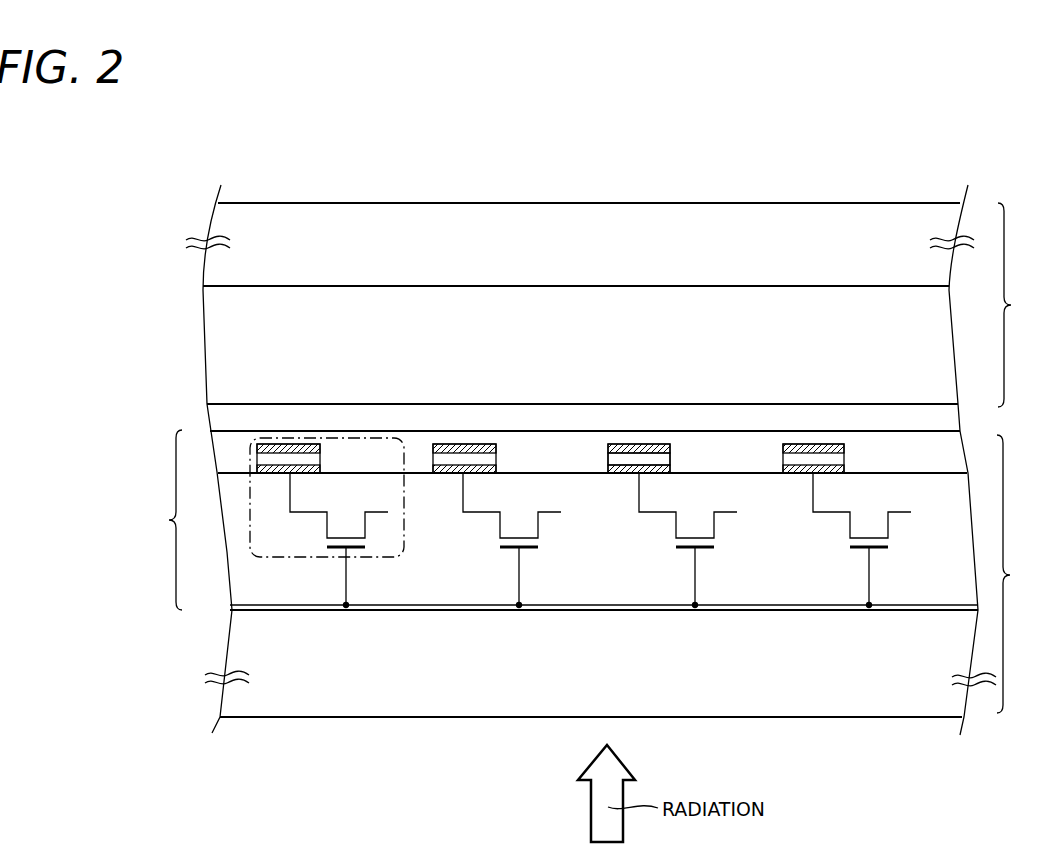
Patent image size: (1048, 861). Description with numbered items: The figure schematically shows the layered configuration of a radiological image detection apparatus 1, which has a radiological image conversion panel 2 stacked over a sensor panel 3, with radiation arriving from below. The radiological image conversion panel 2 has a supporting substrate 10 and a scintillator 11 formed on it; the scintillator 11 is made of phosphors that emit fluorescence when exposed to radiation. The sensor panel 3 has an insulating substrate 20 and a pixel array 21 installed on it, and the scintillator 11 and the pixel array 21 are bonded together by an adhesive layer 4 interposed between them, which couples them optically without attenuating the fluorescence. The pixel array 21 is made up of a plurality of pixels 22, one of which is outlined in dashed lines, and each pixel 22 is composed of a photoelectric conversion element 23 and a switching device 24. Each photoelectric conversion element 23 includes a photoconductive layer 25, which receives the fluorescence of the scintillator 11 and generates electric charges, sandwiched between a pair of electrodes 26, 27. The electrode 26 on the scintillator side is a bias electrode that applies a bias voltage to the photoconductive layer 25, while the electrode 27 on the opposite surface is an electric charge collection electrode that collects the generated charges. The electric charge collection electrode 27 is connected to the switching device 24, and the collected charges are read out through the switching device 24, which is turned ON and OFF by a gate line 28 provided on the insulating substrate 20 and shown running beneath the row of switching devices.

The radiological image detection apparatus 1 is at (912, 152).
The radiological image conversion panel 2 is at (615, 305).
The sensor panel 3 is at (627, 574).
The adhesive layer 4 is at (950, 420).
The supporting substrate 10 is at (348, 208).
The scintillator 11 is at (225, 348).
The insulating substrate 20 is at (330, 705).
The pixel array 21 is at (158, 520).
The pixel 22 is at (246, 522).
The photoelectric conversion element 23 is at (580, 396).
The switching device 24 is at (372, 521).
The photoconductive layer 25 is at (668, 457).
The bias electrode 26 is at (668, 447).
The electric charge collection electrode 27 is at (668, 468).
The gate line 28 is at (836, 613).